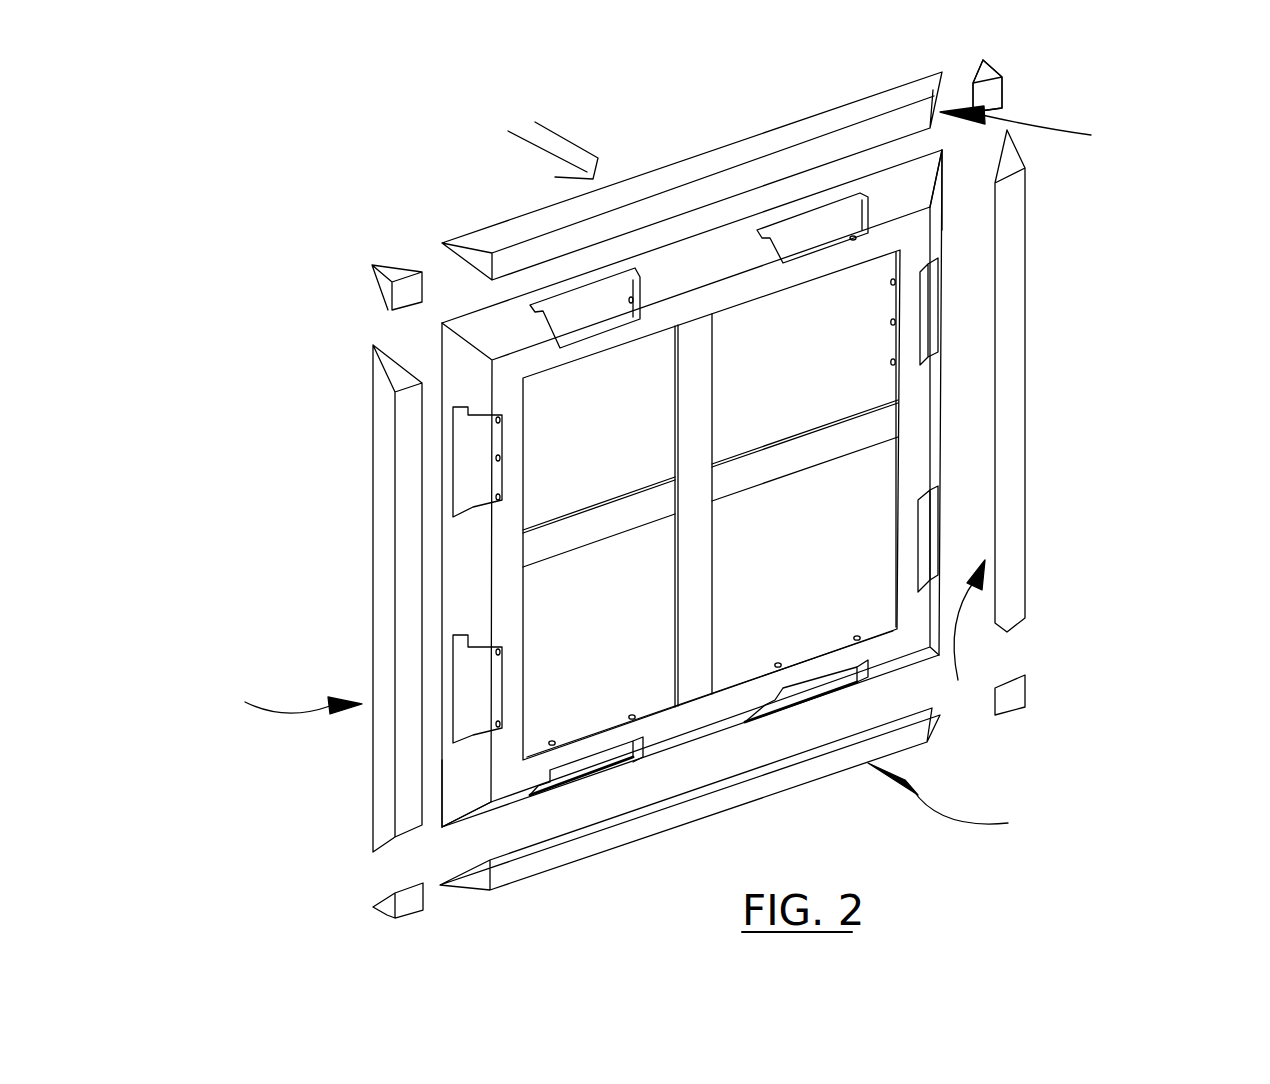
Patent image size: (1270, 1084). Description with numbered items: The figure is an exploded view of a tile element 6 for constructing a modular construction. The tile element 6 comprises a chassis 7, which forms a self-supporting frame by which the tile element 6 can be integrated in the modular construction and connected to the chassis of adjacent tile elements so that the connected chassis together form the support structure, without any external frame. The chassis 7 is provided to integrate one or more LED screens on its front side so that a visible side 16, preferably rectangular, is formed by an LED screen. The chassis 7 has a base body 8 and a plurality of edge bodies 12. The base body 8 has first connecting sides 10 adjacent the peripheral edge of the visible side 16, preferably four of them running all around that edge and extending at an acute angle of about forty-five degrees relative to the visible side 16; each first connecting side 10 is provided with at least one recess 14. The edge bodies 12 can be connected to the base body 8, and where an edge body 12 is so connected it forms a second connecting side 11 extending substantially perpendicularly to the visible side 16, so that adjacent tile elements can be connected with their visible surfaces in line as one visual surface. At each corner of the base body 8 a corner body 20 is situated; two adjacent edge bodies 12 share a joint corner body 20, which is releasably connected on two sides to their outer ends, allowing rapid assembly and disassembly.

The tile element 6 is at (317, 190).
The chassis 7 is at (1052, 110).
The base body 8 is at (933, 640).
The first connecting side 10 is at (927, 181).
The second connecting side 11 is at (805, 128).
The edge body 12 is at (666, 471).
The recess 14 is at (790, 233).
The visible side 16 is at (527, 123).
The corner body 20 is at (1005, 80).